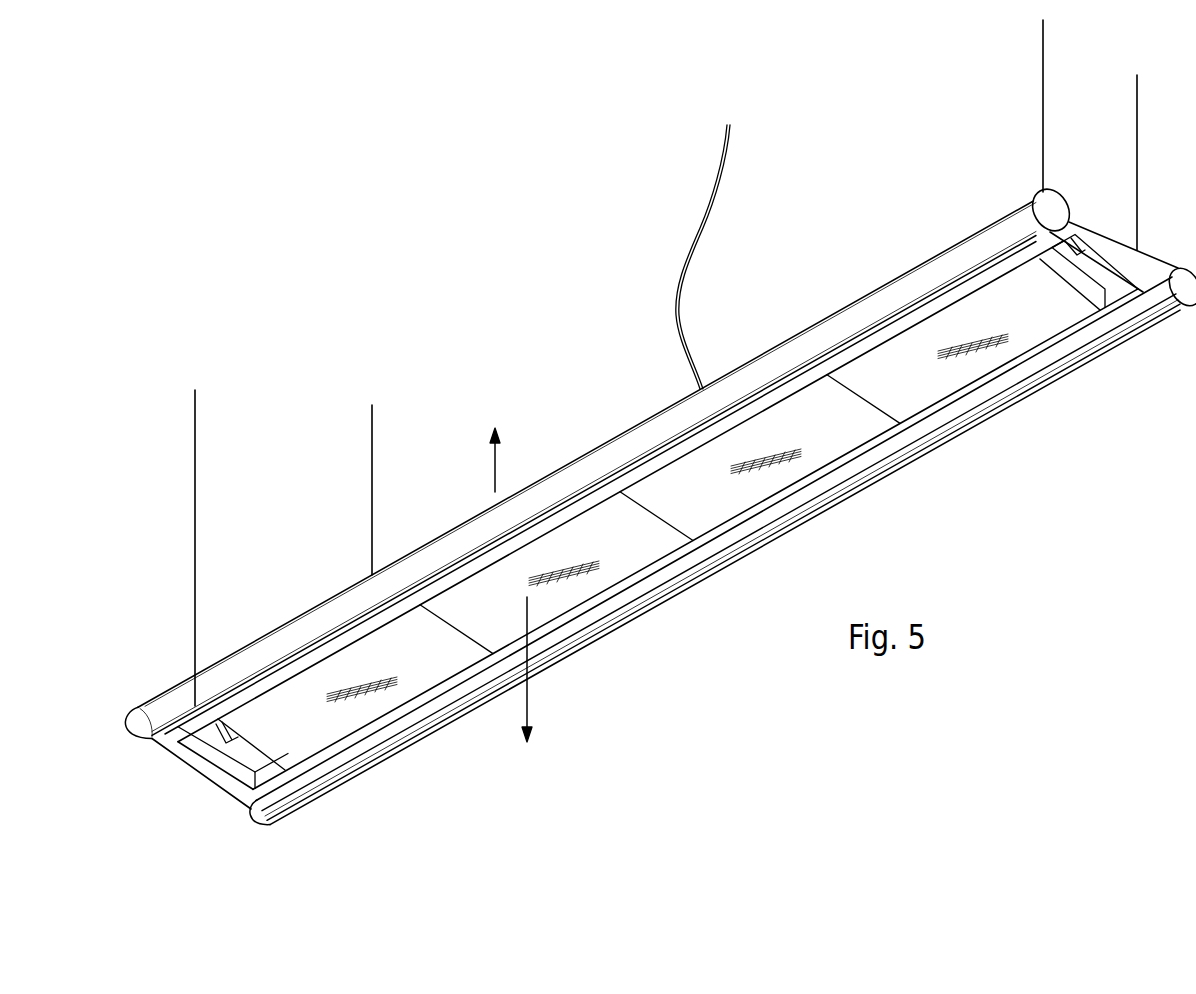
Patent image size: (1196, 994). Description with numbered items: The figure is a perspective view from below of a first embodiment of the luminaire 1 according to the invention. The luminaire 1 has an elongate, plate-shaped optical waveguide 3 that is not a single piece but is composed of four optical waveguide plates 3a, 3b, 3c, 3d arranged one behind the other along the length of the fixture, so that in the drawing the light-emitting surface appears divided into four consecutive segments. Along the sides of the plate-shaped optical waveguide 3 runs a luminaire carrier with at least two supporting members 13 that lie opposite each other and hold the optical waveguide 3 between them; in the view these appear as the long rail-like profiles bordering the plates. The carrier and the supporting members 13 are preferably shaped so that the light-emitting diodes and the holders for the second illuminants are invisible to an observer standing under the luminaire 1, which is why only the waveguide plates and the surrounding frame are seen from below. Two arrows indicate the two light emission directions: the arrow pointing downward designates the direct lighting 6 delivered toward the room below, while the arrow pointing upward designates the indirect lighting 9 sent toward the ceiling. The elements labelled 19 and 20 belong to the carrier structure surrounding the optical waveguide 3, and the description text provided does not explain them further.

The luminaire 1 is at (660, 422).
The plate-shaped optical waveguide 3 is at (658, 515).
The optical waveguide plate 3a is at (417, 675).
The optical waveguide plate 3b is at (622, 568).
The optical waveguide plate 3c is at (770, 480).
The optical waveguide plate 3d is at (980, 357).
The direct lighting 6 is at (530, 703).
The indirect lighting 9 is at (495, 462).
The supporting member 13 is at (735, 568).
The upper frame profile 19 is at (887, 297).
The housing 20 is at (650, 449).